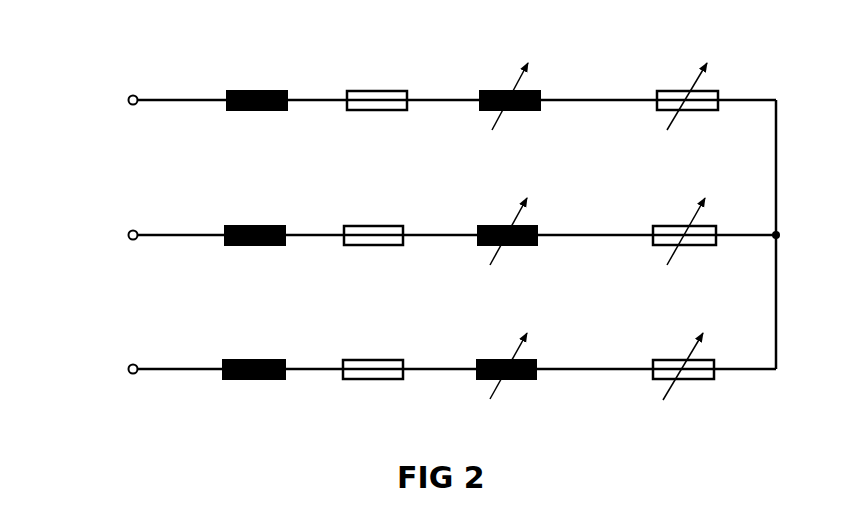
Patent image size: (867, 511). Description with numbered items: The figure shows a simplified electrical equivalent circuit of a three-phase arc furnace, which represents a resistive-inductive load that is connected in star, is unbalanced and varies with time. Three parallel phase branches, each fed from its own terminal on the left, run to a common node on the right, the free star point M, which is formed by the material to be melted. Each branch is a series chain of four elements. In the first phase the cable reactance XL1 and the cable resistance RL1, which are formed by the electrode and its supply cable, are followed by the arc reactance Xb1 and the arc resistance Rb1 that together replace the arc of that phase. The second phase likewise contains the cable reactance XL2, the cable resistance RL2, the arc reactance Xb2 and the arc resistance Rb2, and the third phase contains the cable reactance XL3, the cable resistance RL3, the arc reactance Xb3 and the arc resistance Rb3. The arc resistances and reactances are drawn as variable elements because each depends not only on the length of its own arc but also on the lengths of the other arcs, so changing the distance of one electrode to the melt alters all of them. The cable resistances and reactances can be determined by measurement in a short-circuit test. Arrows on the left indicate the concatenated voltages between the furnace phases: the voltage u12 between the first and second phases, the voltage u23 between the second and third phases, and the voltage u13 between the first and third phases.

The cable reactance XL1 is at (273, 90).
The cable resistance RL1 is at (393, 90).
The arc reactance Xb1 is at (493, 90).
The arc resistance Rb1 is at (682, 90).
The cable reactance XL2 is at (267, 225).
The cable resistance RL2 is at (372, 225).
The arc reactance Xb2 is at (492, 225).
The arc resistance Rb2 is at (672, 225).
The cable reactance XL3 is at (260, 359).
The cable resistance RL3 is at (382, 359).
The arc reactance Xb3 is at (498, 359).
The arc resistance Rb3 is at (672, 359).
The free star point M is at (781, 235).
The concatenated voltage u12 is at (113, 105).
The concatenated voltage u13 is at (80, 105).
The concatenated voltage u23 is at (113, 240).